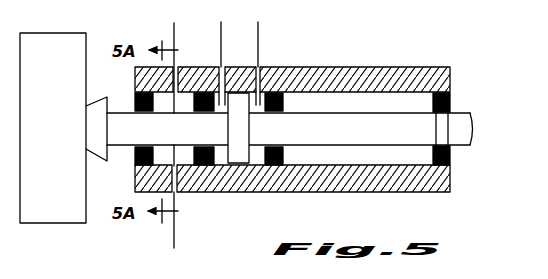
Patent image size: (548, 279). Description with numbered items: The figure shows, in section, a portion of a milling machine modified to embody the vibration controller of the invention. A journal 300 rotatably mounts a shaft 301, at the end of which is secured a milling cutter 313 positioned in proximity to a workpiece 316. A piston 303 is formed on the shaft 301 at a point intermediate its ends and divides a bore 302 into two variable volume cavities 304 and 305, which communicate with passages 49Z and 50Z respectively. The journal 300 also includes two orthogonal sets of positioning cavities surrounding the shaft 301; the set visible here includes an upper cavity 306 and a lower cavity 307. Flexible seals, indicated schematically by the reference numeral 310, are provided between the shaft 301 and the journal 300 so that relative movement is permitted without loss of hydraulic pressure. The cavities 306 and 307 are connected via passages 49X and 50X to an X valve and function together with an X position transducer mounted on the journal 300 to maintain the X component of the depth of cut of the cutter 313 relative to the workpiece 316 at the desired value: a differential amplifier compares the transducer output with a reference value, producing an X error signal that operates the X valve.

The journal 300 is at (398, 70).
The shaft 301 is at (462, 127).
The bore 302 is at (244, 166).
The piston 303 is at (245, 130).
The variable volume cavity 304 is at (218, 92).
The variable volume cavity 305 is at (260, 66).
The upper cavity 306 is at (180, 106).
The lower cavity 307 is at (186, 172).
The flexible seals 310 is at (285, 103).
The milling cutter 313 is at (90, 119).
The workpiece 316 is at (53, 128).
The passage 49X is at (174, 33).
The passage 49Z is at (221, 32).
The passage 50X is at (175, 240).
The passage 50Z is at (258, 44).